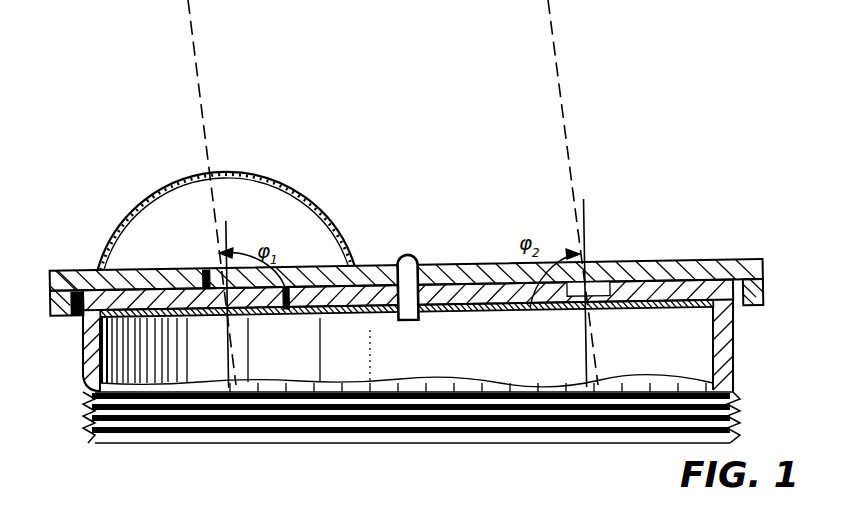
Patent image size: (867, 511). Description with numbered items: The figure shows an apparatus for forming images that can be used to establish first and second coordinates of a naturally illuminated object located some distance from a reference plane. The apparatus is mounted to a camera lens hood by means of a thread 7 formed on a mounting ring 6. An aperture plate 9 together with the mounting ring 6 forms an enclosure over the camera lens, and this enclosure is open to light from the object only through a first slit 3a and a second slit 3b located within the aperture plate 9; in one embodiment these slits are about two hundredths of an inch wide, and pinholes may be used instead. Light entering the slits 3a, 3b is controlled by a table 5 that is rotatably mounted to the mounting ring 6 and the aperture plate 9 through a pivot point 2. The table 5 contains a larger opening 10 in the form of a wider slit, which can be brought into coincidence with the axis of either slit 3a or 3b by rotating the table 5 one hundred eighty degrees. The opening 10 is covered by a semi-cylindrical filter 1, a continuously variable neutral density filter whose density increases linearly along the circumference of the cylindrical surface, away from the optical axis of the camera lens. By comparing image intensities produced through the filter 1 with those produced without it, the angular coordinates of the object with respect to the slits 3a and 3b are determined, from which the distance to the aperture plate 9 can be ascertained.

The semi-cylindrical filter 1 is at (321, 214).
The pivot point 2 is at (418, 320).
The first slit 3a is at (227, 320).
The second slit 3b is at (583, 313).
The table 5 is at (49, 309).
The mounting ring 6 is at (83, 370).
The thread 7 is at (83, 428).
The aperture plate 9 is at (345, 318).
The larger opening 10 is at (207, 268).